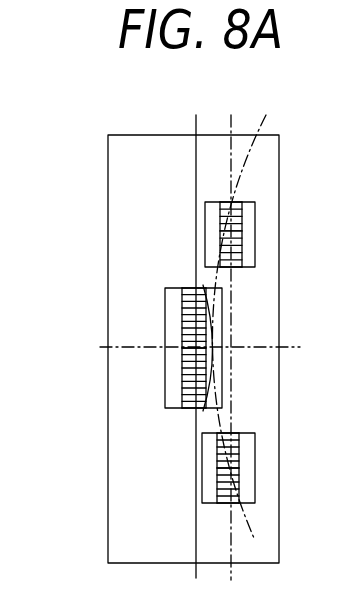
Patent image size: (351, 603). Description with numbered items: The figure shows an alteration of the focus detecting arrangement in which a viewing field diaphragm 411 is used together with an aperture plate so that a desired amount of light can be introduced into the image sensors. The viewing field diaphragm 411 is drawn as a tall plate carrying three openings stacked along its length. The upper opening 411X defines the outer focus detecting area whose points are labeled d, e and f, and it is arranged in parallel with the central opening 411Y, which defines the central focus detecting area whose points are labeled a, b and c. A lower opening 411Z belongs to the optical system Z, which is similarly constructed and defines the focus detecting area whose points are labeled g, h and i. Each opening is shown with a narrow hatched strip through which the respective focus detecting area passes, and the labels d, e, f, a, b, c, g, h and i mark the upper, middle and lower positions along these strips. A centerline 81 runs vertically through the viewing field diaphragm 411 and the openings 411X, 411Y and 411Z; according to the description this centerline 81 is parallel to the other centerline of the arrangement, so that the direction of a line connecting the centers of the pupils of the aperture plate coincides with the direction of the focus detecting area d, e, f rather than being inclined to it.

The centerline 81 is at (231, 124).
The viewing field diaphragm 411 is at (117, 152).
The opening 411X is at (205, 226).
The opening 411Y is at (165, 319).
The opening 411Z is at (202, 464).
The focus detecting area point a is at (203, 285).
The focus detecting area point b is at (205, 342).
The focus detecting area point c is at (203, 411).
The focus detecting area point d is at (232, 202).
The focus detecting area point e is at (225, 232).
The focus detecting area point f is at (232, 267).
The focus detecting area point g is at (230, 505).
The focus detecting area point h is at (233, 469).
The focus detecting area point i is at (232, 433).